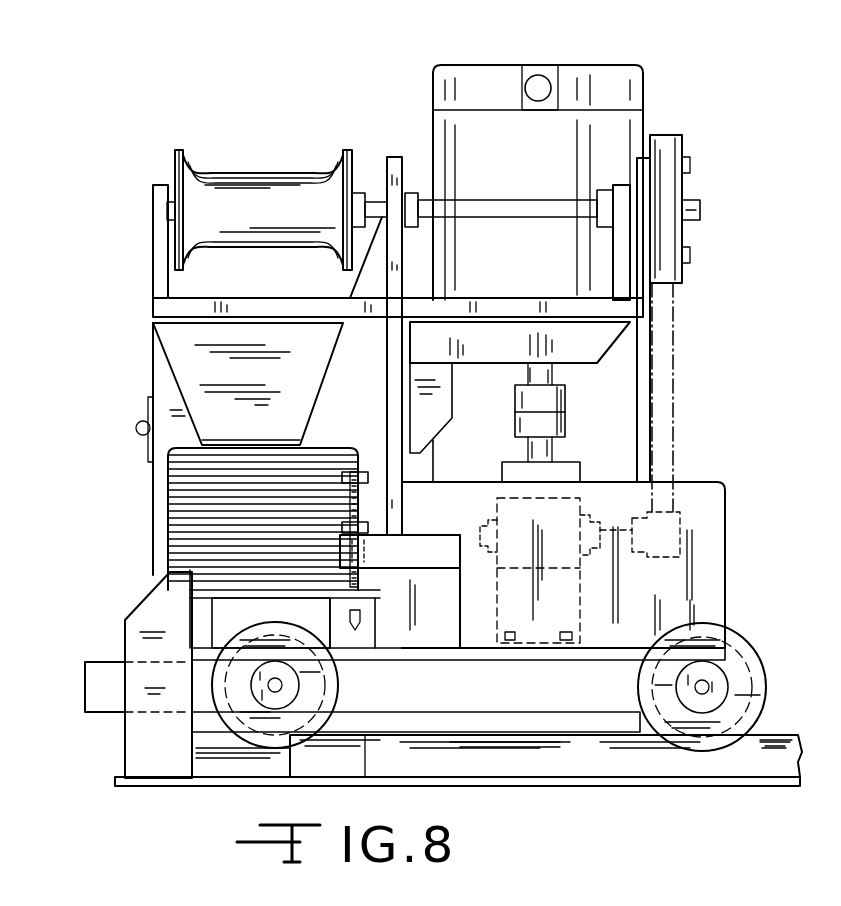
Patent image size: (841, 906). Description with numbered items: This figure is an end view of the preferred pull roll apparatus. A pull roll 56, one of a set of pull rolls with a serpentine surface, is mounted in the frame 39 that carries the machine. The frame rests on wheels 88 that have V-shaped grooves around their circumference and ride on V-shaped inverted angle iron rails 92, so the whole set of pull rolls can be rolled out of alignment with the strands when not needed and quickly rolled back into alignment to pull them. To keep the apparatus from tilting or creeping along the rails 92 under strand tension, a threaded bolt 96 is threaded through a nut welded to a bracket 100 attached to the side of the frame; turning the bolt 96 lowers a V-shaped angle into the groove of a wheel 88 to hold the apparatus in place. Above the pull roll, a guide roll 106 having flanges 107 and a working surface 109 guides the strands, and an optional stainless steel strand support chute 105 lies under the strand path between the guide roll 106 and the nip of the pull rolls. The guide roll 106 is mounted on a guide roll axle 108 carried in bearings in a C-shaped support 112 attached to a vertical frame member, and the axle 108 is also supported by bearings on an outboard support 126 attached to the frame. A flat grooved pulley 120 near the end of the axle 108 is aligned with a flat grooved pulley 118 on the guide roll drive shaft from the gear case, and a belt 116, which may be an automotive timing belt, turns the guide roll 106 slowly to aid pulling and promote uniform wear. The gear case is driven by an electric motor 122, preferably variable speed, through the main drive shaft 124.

The frame 39 is at (158, 312).
The pull roll 56 is at (175, 503).
The wheels 88 is at (748, 643).
The rails 92 is at (780, 740).
The threaded bolt 96 is at (345, 507).
The bracket 100 is at (418, 548).
The strand support chute 105 is at (195, 362).
The guide roll 106 is at (228, 190).
The flanges 107 is at (178, 148).
The guide roll axle 108 is at (700, 211).
The working surface 109 is at (275, 170).
The C-shaped support 112 is at (160, 238).
The belt 116 is at (673, 396).
The flat grooved pulley 118 is at (678, 526).
The flat grooved pulley 120 is at (683, 150).
The electric motor 122 is at (633, 93).
The main drive shaft 124 is at (393, 157).
The outboard support 126 is at (617, 255).